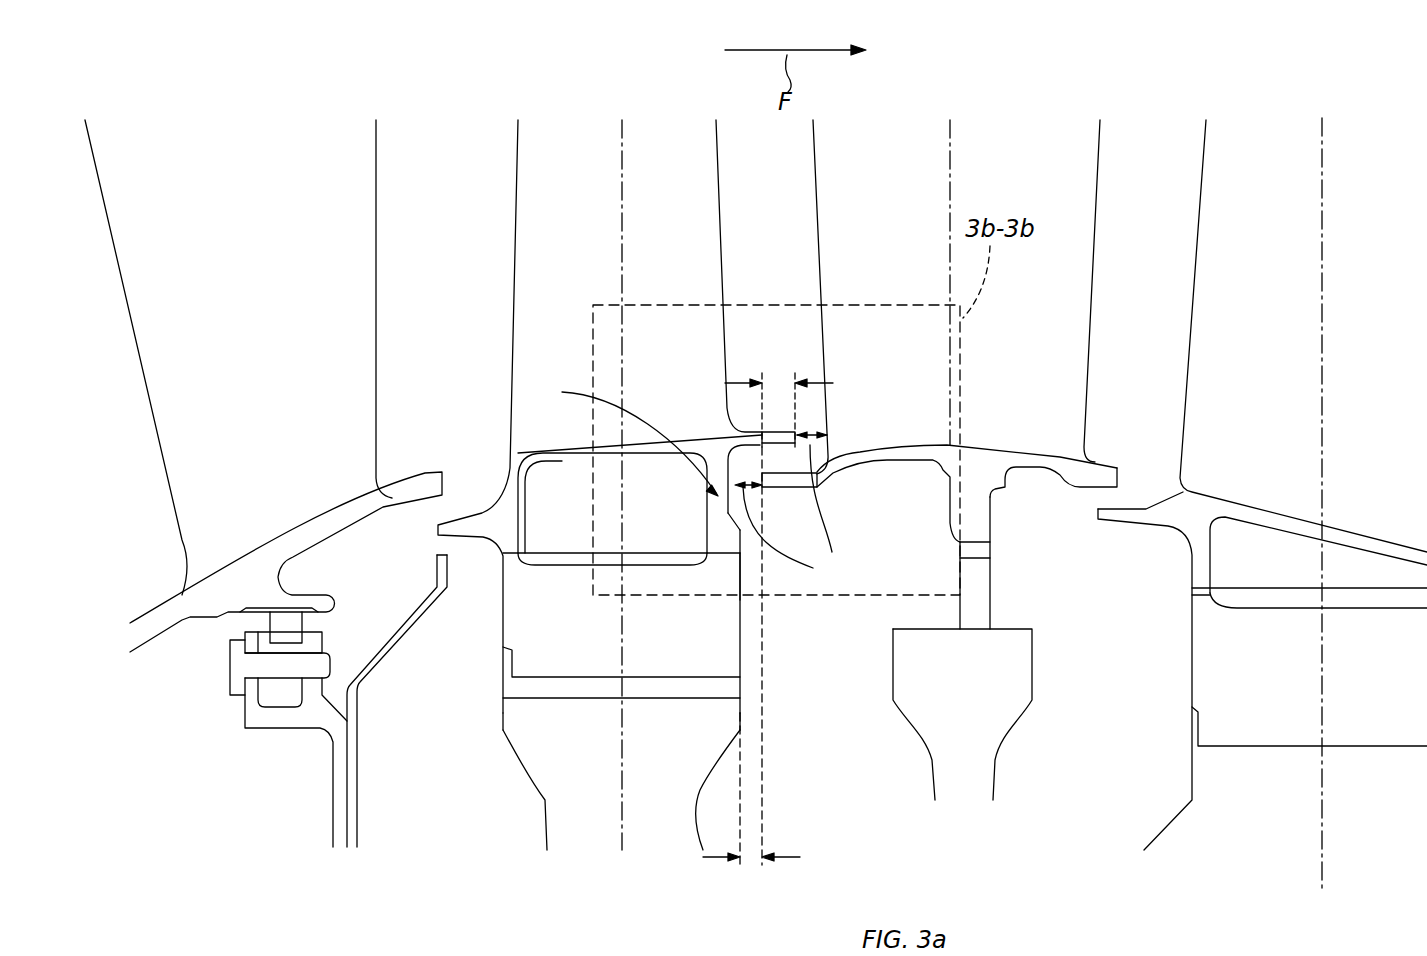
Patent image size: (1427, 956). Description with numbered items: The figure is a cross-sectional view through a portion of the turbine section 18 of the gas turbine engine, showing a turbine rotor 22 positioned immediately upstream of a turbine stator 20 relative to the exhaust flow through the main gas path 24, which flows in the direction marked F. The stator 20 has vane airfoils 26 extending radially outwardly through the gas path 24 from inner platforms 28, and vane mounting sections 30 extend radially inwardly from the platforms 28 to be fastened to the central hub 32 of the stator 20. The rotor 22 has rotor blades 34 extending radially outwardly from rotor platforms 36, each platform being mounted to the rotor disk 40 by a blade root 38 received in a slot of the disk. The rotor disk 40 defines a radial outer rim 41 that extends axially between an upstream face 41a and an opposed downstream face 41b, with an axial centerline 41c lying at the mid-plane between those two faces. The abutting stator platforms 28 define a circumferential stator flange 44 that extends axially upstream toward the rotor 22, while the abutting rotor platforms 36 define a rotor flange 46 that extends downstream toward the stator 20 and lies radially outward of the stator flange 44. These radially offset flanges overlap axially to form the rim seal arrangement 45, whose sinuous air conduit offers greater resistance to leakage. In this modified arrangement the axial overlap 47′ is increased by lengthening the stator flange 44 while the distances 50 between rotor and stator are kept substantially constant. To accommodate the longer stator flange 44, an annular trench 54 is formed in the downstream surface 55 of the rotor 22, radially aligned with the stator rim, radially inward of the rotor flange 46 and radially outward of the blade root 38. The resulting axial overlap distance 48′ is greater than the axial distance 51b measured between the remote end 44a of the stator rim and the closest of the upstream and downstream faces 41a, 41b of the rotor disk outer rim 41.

The turbine section 18 is at (1266, 91).
The turbine stator 20 is at (1021, 112).
The turbine rotor 22 is at (665, 125).
The main gas path 24 is at (1136, 187).
The vane airfoil 26 is at (1050, 298).
The inner platform 28 is at (1086, 468).
The vane mounting section 30 is at (975, 588).
The central hub 32 is at (993, 745).
The rotor blade 34 is at (522, 208).
The rotor platform 36 is at (556, 460).
The blade root 38 is at (730, 653).
The rotor disk 40 is at (682, 780).
The radial outer rim 41 is at (742, 718).
The upstream face 41a is at (505, 712).
The downstream face 41b is at (740, 713).
The axial centerline 41c is at (622, 232).
The stator flange 44 is at (791, 479).
The remote end 44a is at (757, 440).
The rim seal arrangement 45 is at (845, 341).
The rotor flange 46 is at (758, 433).
The axial overlap 47′ is at (810, 325).
The axial overlap distance 48′ is at (778, 387).
The distances 50 is at (803, 515).
The axial distance 51b is at (753, 860).
The annular trench 54 is at (623, 433).
The downstream surface 55 is at (740, 577).